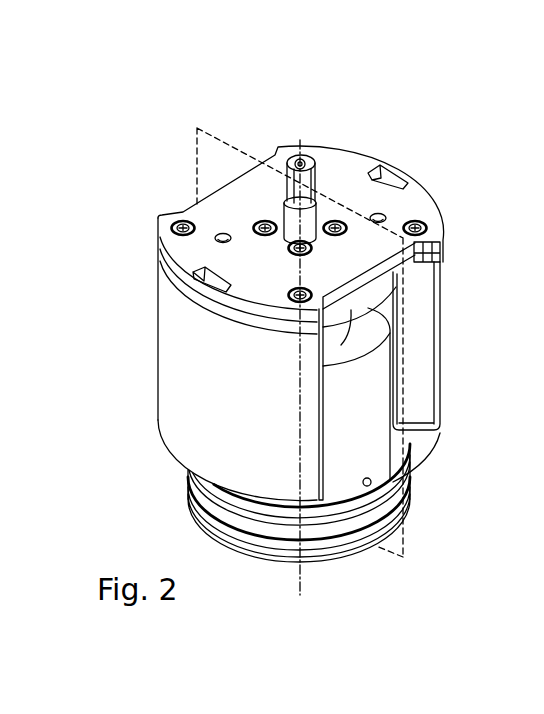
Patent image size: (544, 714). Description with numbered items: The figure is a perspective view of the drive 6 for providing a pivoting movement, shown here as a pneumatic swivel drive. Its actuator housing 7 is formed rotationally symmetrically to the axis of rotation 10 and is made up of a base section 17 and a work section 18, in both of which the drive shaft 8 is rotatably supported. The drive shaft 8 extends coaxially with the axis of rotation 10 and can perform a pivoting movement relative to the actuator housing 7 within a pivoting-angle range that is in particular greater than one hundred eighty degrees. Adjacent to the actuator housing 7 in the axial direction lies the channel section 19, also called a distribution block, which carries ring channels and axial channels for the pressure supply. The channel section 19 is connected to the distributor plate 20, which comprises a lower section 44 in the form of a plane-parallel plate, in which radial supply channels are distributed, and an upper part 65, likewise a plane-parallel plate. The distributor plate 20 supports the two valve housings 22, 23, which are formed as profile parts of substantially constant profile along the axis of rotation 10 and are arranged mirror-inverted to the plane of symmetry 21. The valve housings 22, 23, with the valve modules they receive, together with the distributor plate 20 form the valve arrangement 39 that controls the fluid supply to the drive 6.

The drive 6 is at (423, 125).
The actuator housing 7 is at (352, 452).
The drive shaft 8 is at (307, 218).
The axis of rotation 10 is at (302, 578).
The base section 17 is at (413, 453).
The work section 18 is at (368, 396).
The channel section 19 is at (317, 370).
The distributor plate 20 is at (220, 220).
The plane of symmetry 21 is at (235, 147).
The valve housing 22 is at (188, 371).
The valve housing 23 is at (417, 323).
The valve arrangement 39 is at (193, 305).
The lower section of the distributor plate 44 is at (434, 262).
The upper part of the distributor plate 65 is at (424, 210).